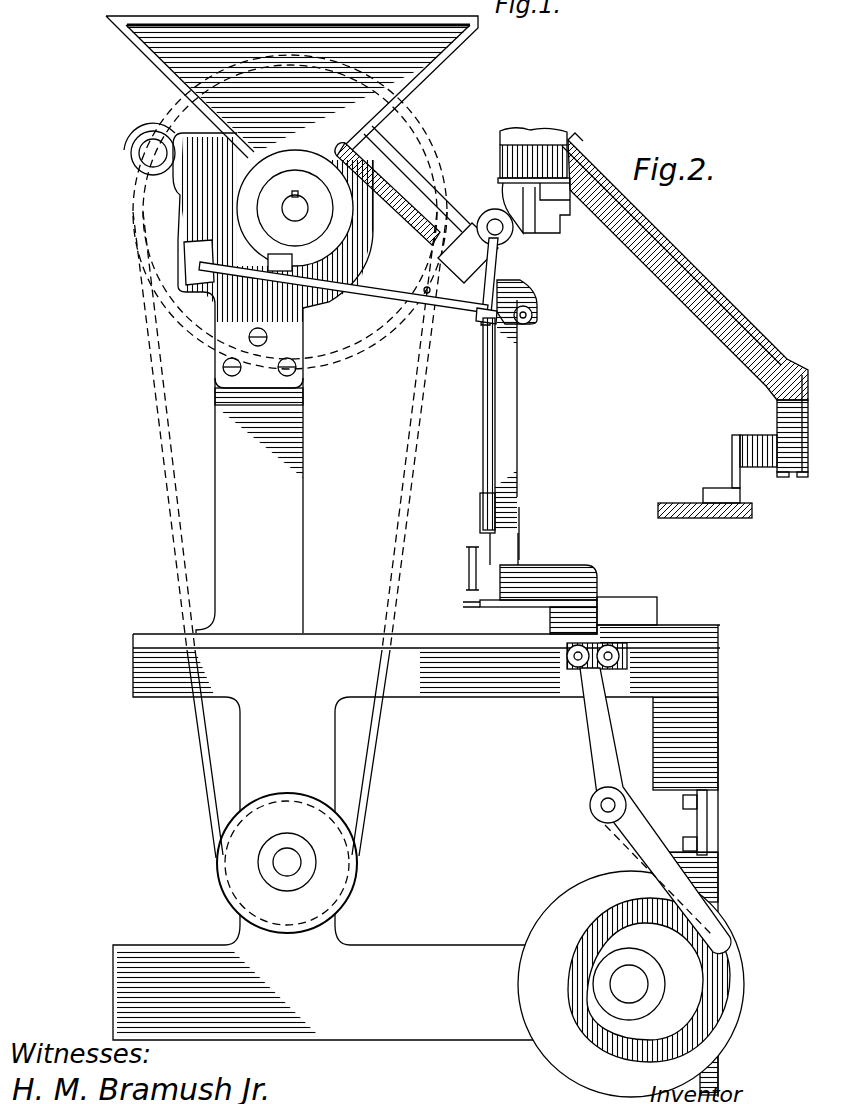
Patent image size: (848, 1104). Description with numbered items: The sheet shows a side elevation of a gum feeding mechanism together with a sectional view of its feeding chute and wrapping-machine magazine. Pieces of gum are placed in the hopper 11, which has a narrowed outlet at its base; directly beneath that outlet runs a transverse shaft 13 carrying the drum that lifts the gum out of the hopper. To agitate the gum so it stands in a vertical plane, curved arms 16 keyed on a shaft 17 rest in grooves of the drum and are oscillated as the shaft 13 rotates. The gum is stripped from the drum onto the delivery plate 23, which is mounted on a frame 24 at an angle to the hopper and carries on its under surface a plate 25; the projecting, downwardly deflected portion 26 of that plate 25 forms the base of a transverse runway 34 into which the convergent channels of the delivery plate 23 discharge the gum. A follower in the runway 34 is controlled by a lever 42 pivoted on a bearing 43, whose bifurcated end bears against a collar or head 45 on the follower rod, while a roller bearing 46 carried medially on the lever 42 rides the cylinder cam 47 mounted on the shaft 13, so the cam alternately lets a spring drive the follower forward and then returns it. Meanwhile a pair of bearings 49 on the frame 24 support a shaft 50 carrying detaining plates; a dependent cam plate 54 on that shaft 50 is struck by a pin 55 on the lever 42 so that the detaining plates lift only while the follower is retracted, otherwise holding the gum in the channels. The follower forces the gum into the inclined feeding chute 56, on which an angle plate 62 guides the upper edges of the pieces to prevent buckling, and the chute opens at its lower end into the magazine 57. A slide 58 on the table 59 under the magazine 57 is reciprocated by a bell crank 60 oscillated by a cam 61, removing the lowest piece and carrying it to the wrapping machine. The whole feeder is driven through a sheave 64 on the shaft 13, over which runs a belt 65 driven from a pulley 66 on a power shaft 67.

In FIG. 1, the hopper 11 is at (292, 87).
In FIG. 1, the shaft 13 is at (302, 212).
In FIG. 1, the arms 16 is at (190, 134).
In FIG. 1, the shaft 17 is at (141, 155).
In FIG. 1, the delivery plate 23 is at (402, 188).
In FIG. 1, the frame 24 is at (404, 254).
In FIG. 1, the plate 25 is at (382, 183).
In FIG. 2, the projecting portion or base 26 is at (523, 200).
In FIG. 2, the runway 34 is at (521, 134).
In FIG. 1, the lever 42 is at (356, 300).
In FIG. 1, the bearing 43 is at (200, 264).
In FIG. 1, the collar or head 45 is at (533, 320).
In FIG. 1, the roller bearing 46 is at (279, 262).
In FIG. 1, the cylinder cam 47 is at (278, 166).
In FIG. 1, the bearings 49 is at (471, 236).
In FIG. 1, the shaft 50 is at (500, 243).
In FIG. 1, the cam plate 54 is at (500, 272).
In FIG. 1, the pin 55 is at (480, 294).
In FIG. 1, the feeding chute 56 is at (512, 472).
In FIG. 2, the feeding chute 56 is at (655, 274).
In FIG. 1, the magazine 57 is at (507, 556).
In FIG. 2, the magazine 57 is at (800, 422).
In FIG. 1, the slide 58 is at (625, 604).
In FIG. 1, the table 59 is at (441, 690).
In FIG. 2, the table 59 is at (702, 518).
In FIG. 1, the bell crank 60 is at (590, 749).
In FIG. 1, the cam 61 is at (542, 942).
In FIG. 2, the angle plate 62 is at (574, 148).
In FIG. 1, the sheave 64 is at (150, 259).
In FIG. 1, the belt 65 is at (208, 806).
In FIG. 1, the pulley 66 is at (240, 882).
In FIG. 1, the power shaft 67 is at (287, 860).